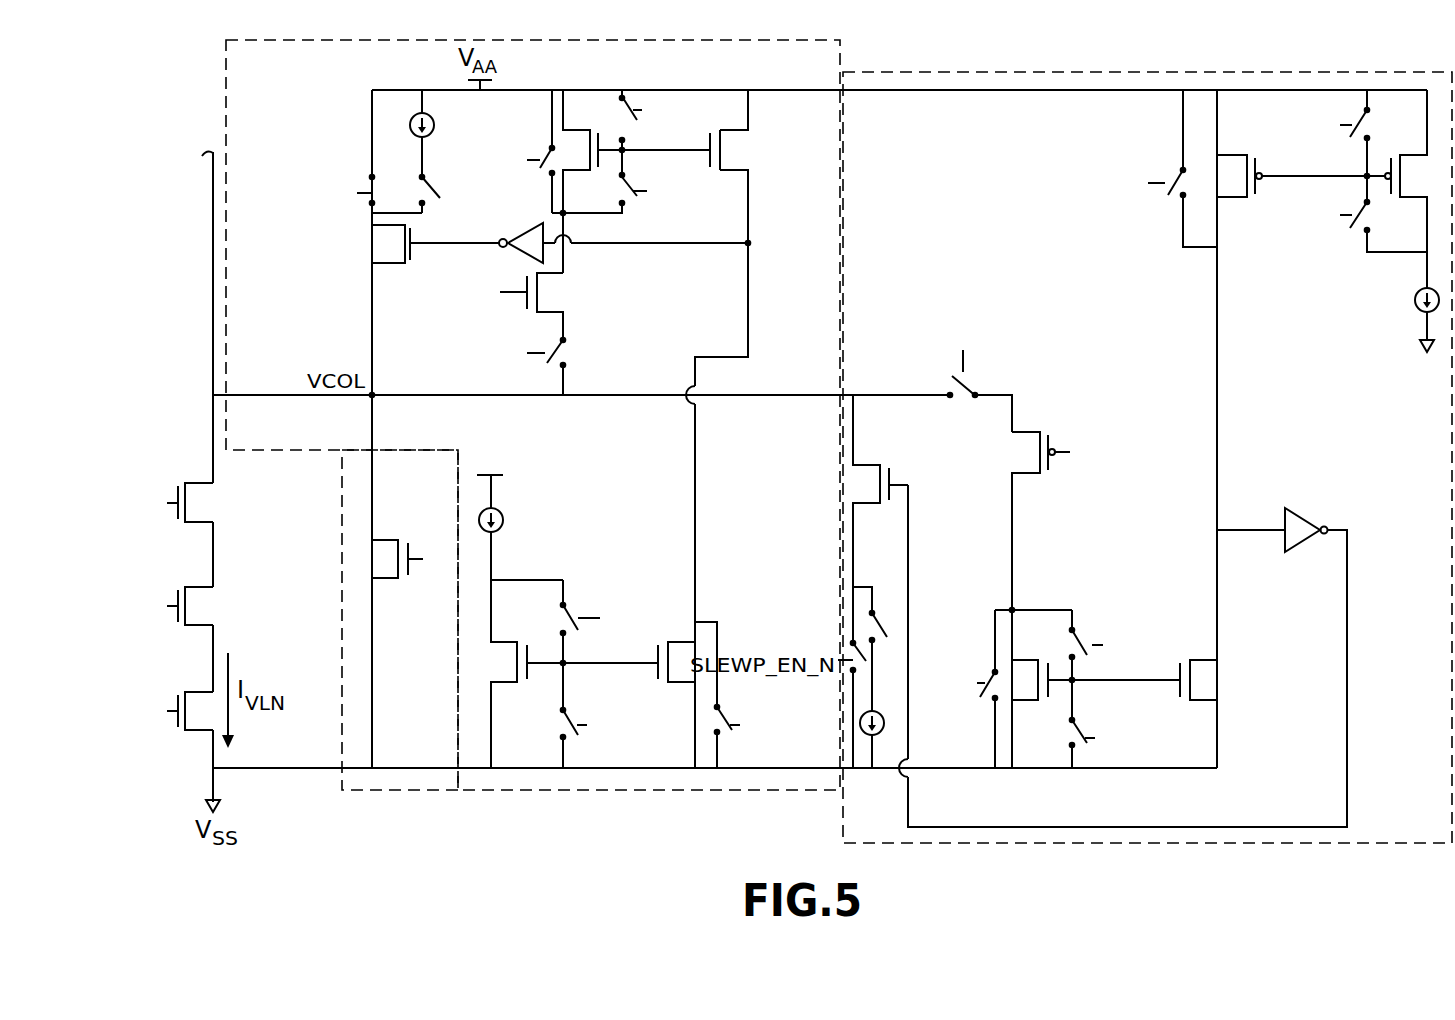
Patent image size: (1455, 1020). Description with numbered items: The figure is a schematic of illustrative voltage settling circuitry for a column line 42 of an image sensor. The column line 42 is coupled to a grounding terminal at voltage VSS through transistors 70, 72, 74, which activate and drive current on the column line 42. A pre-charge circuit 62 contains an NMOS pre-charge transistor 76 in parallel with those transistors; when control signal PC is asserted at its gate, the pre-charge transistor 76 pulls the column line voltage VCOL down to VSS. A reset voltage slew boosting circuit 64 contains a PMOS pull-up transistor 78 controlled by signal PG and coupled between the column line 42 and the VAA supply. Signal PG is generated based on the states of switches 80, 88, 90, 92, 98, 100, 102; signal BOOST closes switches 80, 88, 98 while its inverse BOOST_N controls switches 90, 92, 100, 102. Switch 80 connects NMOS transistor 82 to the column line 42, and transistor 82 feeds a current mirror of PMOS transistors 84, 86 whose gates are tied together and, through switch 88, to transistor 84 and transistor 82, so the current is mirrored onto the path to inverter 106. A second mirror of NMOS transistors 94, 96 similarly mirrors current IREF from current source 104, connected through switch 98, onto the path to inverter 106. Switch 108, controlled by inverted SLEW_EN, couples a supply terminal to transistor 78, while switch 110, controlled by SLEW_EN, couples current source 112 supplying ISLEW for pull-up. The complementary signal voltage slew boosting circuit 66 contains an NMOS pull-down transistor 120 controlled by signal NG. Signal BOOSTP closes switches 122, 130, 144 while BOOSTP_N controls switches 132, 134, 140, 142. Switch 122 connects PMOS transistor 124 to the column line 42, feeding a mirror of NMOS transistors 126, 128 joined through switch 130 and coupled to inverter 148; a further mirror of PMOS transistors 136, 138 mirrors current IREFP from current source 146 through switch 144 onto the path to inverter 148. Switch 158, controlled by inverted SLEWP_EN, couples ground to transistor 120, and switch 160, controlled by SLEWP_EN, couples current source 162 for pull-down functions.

The column line 42 is at (213, 240).
The pre-charge circuit 62 is at (357, 790).
The reset voltage slew boosting circuit 64 is at (805, 40).
The signal voltage slew boosting circuit 66 is at (905, 72).
The transistor 70 is at (192, 484).
The transistor 72 is at (197, 598).
The transistor 74 is at (197, 700).
The pre-charge transistor 76 is at (385, 568).
The pull-up transistor 78 is at (380, 258).
The switch 80 is at (573, 352).
The transistor 82 is at (560, 310).
The transistor 84 is at (575, 130).
The transistor 86 is at (750, 124).
The switch 88 is at (652, 208).
The switch 90 is at (540, 146).
The switch 92 is at (638, 93).
The transistor 94 is at (505, 683).
The transistor 96 is at (678, 680).
The switch 98 is at (578, 605).
The switch 100 is at (578, 742).
The switch 102 is at (735, 702).
The current source 104 is at (503, 505).
The inverter 106 is at (523, 237).
The switch 108 is at (360, 207).
The switch 110 is at (443, 212).
The current source 112 is at (405, 127).
The pull-down transistor 120 is at (872, 455).
The switch 122 is at (978, 373).
The transistor 124 is at (1030, 432).
The transistor 126 is at (1027, 660).
The transistor 128 is at (1205, 660).
The switch 130 is at (1087, 625).
The switch 132 is at (985, 672).
The switch 134 is at (1068, 745).
The transistor 136 is at (1238, 157).
The transistor 138 is at (1418, 158).
The switch 140 is at (1375, 100).
The switch 142 is at (1168, 168).
The switch 144 is at (1350, 238).
The current source 146 is at (1410, 303).
The inverter 148 is at (1295, 525).
The switch 158 is at (862, 648).
The switch 160 is at (902, 622).
The current source 162 is at (866, 740).